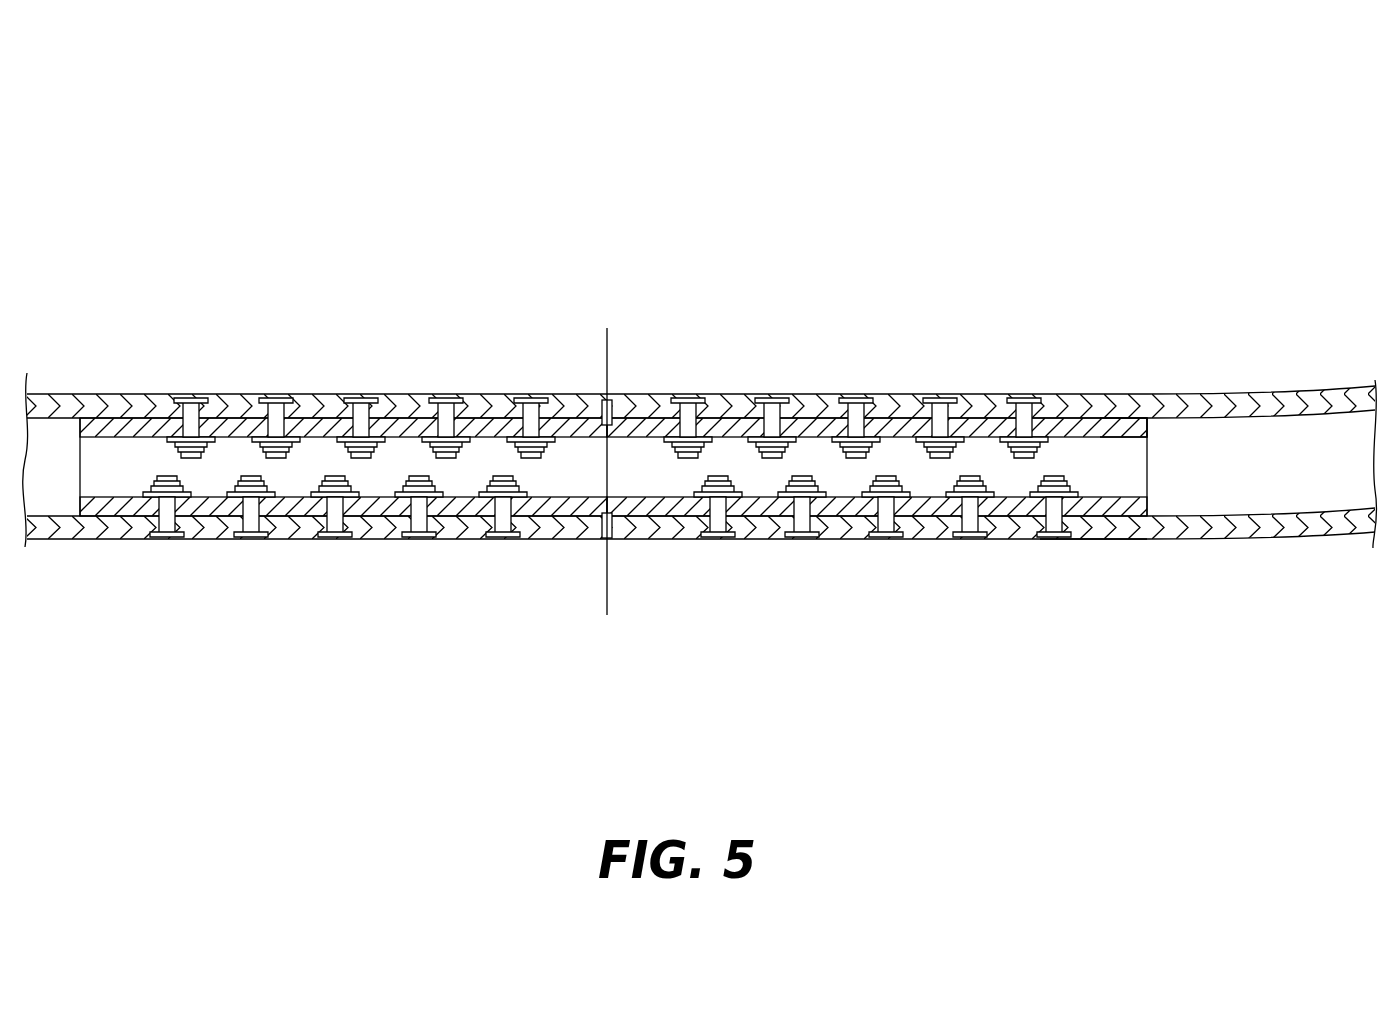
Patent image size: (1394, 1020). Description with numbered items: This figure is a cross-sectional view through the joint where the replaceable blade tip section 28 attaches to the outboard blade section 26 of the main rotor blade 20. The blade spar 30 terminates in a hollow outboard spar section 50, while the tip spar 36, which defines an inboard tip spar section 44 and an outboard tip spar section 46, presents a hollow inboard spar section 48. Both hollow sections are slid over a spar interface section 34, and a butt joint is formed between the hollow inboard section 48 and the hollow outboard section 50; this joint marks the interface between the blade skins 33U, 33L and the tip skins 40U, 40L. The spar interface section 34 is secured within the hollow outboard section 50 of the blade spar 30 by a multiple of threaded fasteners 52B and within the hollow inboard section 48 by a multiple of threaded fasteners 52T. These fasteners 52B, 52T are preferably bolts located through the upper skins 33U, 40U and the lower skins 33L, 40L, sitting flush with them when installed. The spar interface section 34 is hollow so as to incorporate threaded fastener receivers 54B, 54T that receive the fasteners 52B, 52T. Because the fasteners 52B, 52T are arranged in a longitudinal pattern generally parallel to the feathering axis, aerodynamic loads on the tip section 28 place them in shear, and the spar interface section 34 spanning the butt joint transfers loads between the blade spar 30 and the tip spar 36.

The tubular assembly 20 is at (700, 337).
The outboard blade section 26 is at (343, 391).
The replaceable blade tip section 28 is at (885, 374).
The blade spar 30 is at (62, 394).
The upper blade skin 33U is at (230, 394).
The lower blade skin 33L is at (218, 540).
The spar interface section 34 is at (1092, 424).
The tip spar 36 is at (1212, 548).
The upper tip skin 40U is at (1075, 396).
The lower tip skin 40L is at (1012, 540).
The inboard tip spar section 44 is at (1085, 540).
The outboard tip spar section 46 is at (1337, 533).
The hollow inboard spar section 48 is at (647, 403).
The hollow outboard spar section 50 is at (577, 403).
The threaded fasteners 52B is at (375, 410).
The threaded fasteners 52T is at (886, 405).
The threaded fastener receivers 54B is at (374, 458).
The threaded fastener receivers 54T is at (845, 458).